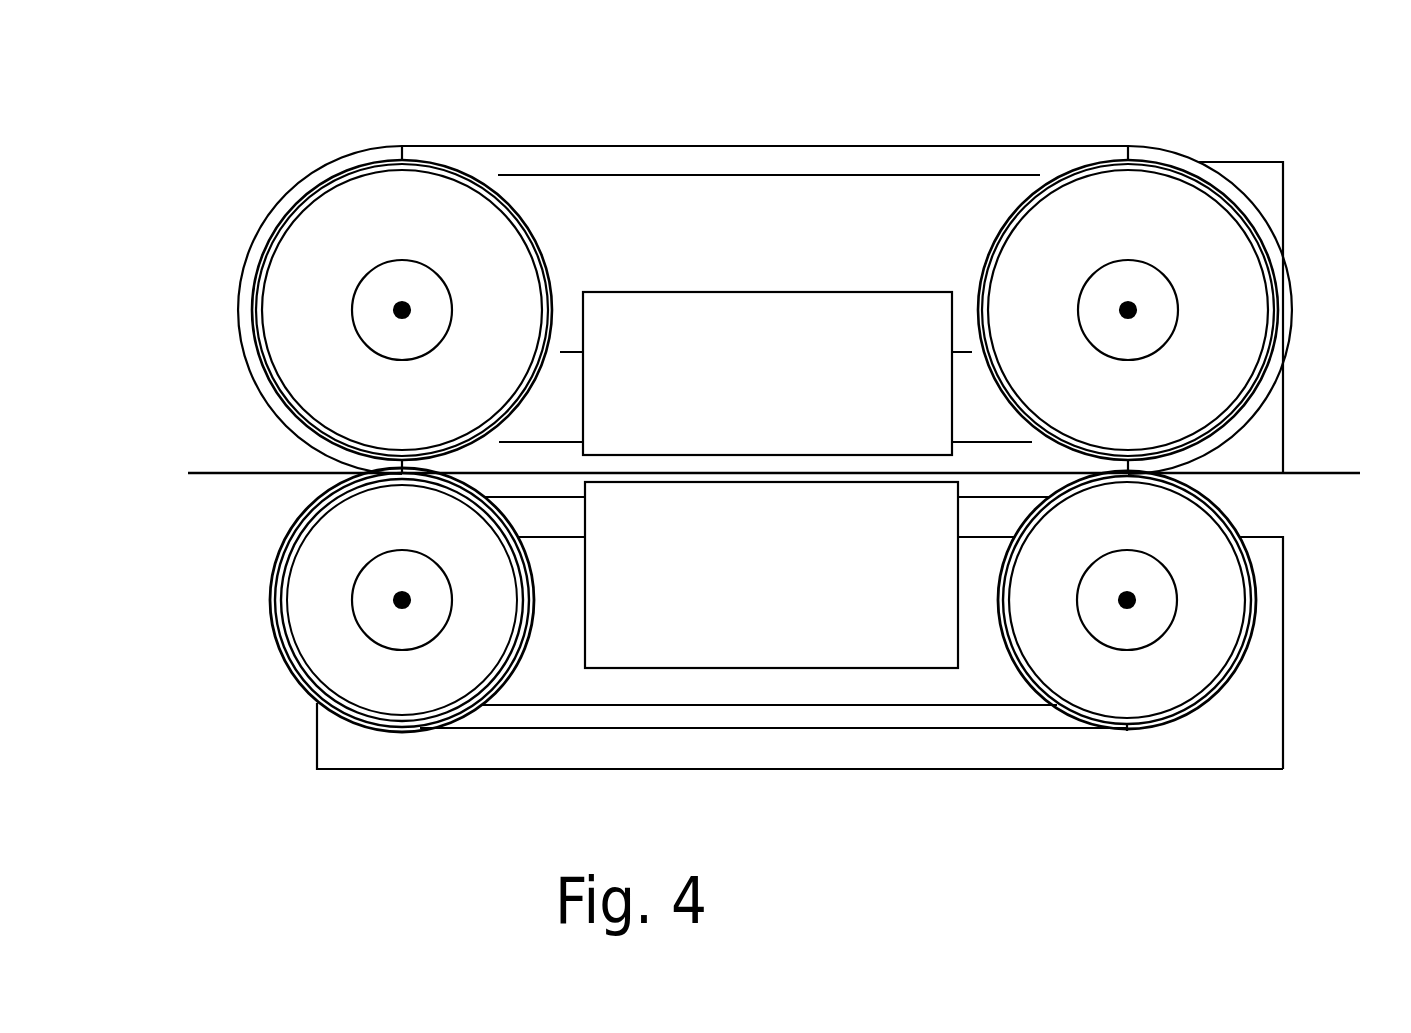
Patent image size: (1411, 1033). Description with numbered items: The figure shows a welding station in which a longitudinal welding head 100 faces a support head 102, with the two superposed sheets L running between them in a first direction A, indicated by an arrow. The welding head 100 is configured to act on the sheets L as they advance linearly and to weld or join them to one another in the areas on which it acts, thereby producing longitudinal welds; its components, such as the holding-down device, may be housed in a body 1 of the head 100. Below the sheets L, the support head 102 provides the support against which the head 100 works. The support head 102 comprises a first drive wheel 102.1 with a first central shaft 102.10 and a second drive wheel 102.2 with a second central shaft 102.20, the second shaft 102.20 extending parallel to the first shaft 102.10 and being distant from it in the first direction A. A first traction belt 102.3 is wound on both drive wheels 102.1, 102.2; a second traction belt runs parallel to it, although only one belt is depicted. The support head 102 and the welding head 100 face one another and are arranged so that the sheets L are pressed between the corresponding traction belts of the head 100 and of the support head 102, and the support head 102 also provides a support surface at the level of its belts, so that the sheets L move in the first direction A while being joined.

The longitudinal welding head 100 is at (302, 123).
The body 1 is at (690, 335).
The superposed sheets L is at (235, 478).
The first direction A is at (1295, 488).
The support head 102 is at (767, 678).
The first drive wheel 102.1 is at (329, 629).
The second drive wheel 102.2 is at (1204, 659).
The first central shaft 102.10 is at (402, 606).
The second central shaft 102.20 is at (1127, 606).
The first traction belt 102.3 is at (707, 716).